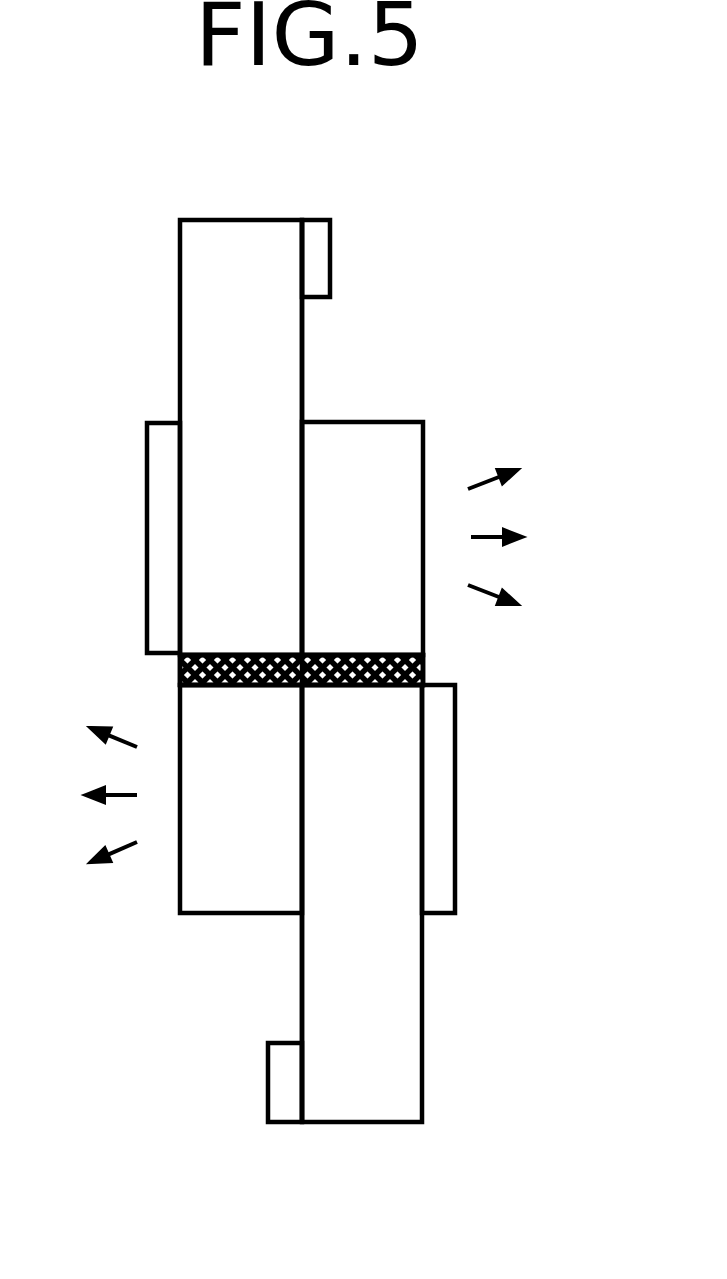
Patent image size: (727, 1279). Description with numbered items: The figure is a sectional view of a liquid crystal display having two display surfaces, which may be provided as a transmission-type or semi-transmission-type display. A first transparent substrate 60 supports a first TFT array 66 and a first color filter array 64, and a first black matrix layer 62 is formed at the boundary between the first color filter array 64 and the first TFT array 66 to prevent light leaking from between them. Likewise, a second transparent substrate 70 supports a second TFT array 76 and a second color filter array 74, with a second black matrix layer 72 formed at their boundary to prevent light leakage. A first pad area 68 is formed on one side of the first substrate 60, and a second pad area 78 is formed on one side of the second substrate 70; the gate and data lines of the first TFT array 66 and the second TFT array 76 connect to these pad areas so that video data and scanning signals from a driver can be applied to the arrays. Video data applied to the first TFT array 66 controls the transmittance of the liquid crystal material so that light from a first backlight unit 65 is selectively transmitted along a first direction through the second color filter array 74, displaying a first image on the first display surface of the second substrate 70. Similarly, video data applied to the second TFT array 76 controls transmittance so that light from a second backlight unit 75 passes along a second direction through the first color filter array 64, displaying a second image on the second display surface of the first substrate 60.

The first transparent substrate 60 is at (449, 406).
The first black matrix layer 62 is at (423, 665).
The first color filter array 64 is at (342, 442).
The first backlight unit 65 is at (455, 842).
The first TFT array 66 is at (374, 1115).
The first pad area 68 is at (287, 1115).
The second transparent substrate 70 is at (141, 897).
The second black matrix layer 72 is at (177, 680).
The second color filter array 74 is at (242, 902).
The second backlight unit 75 is at (153, 453).
The second TFT array 76 is at (225, 226).
The second pad area 78 is at (312, 226).